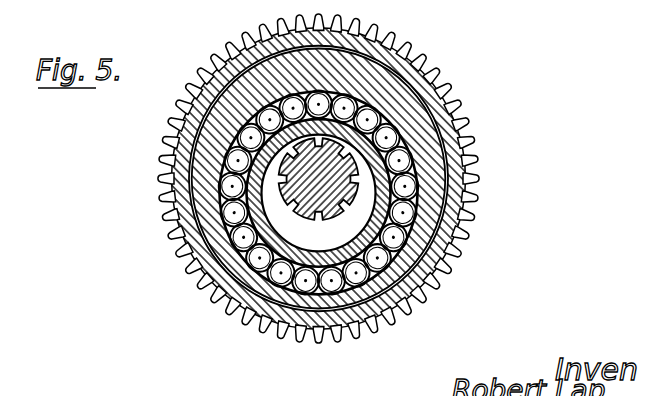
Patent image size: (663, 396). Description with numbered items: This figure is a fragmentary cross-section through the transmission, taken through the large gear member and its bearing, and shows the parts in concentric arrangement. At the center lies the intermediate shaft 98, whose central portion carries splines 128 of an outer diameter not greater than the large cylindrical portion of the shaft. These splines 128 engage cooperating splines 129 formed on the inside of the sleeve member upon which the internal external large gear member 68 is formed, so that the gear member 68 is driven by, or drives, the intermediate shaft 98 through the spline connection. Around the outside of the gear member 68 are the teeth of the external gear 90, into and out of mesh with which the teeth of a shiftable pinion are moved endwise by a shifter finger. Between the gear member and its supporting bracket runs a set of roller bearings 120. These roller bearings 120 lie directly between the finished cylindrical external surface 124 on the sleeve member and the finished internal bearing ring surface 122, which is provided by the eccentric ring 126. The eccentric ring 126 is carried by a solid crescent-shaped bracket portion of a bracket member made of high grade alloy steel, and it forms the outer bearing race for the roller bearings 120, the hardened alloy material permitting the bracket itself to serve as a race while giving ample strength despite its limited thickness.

The internal external large gear member 68 is at (268, 215).
The external gear 90 is at (249, 321).
The intermediate shaft 98 is at (366, 108).
The roller bearings 120 is at (405, 196).
The internal bearing ring surface 122 is at (333, 92).
The finished cylindrical external surface 124 is at (316, 259).
The eccentric ring 126 is at (458, 262).
The splines 128 is at (445, 140).
The cooperating splines 129 is at (280, 179).